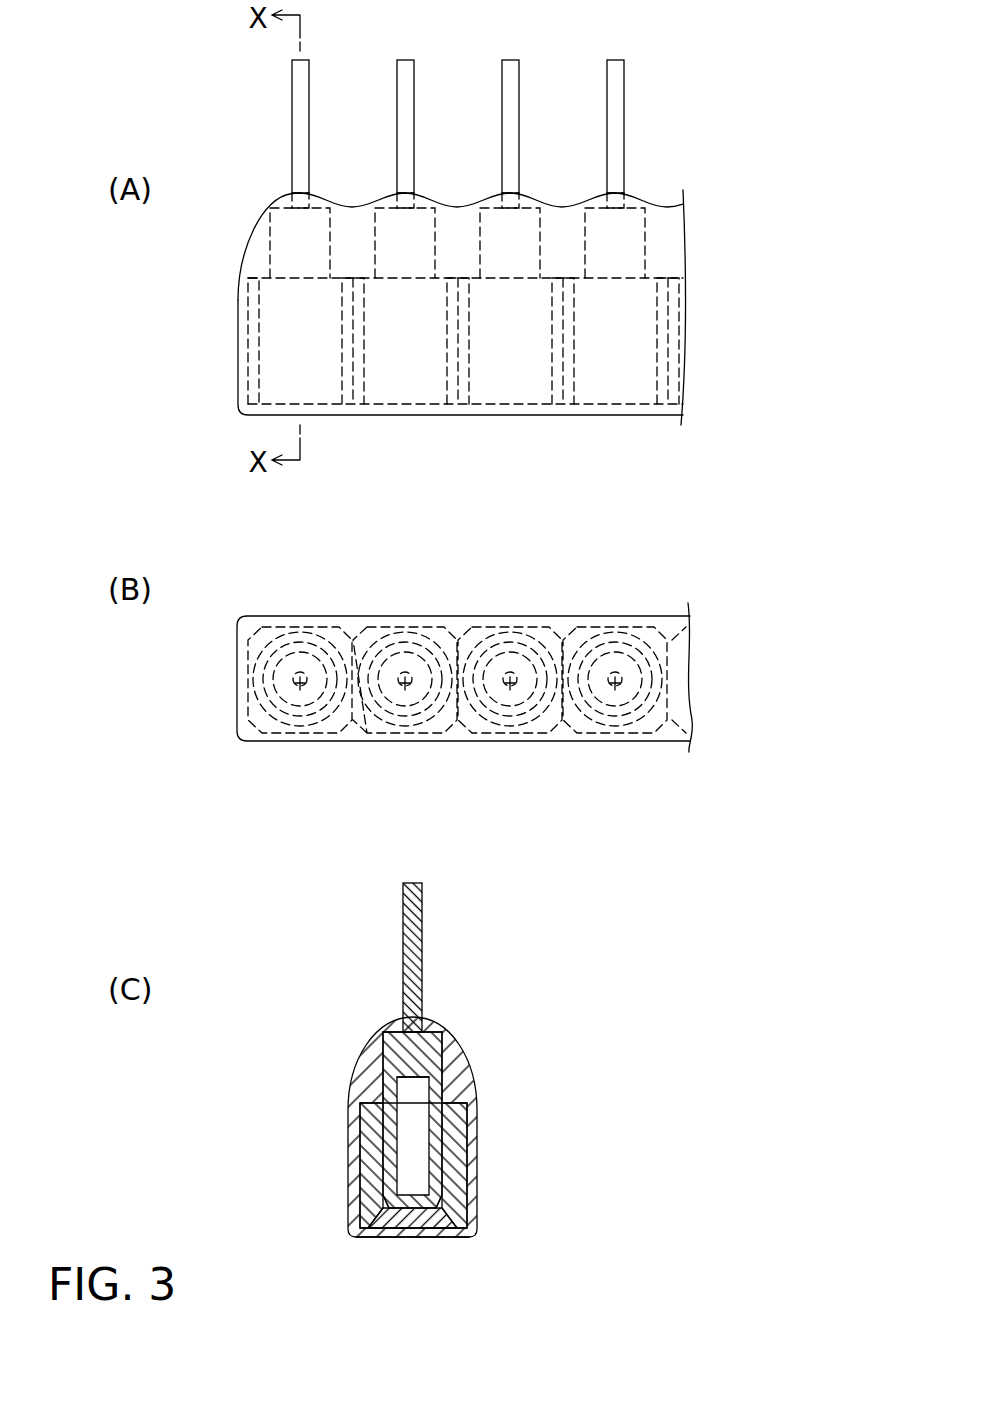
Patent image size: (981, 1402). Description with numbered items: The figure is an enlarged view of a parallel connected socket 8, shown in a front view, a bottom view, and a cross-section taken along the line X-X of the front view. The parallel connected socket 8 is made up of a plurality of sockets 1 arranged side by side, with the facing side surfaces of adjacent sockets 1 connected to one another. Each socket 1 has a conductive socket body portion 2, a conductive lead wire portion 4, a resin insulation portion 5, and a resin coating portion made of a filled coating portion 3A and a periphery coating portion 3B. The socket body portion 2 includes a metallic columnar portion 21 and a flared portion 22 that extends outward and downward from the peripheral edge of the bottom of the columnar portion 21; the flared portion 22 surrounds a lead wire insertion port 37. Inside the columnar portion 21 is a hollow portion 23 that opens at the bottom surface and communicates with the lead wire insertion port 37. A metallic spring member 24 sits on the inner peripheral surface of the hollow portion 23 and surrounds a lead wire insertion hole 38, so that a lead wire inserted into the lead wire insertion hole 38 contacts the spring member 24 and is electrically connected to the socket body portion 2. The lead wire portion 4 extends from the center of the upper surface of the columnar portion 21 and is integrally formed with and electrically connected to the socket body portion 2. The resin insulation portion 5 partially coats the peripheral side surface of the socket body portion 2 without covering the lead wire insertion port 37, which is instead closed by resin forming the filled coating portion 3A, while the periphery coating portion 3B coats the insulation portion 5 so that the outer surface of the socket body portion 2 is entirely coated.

The socket 1 is at (325, 478).
The socket body portion 2 is at (286, 237).
The filled coating portion 3A is at (307, 672).
The periphery coating portion 3B is at (557, 222).
The lead wire portion 4 is at (297, 90).
The resin insulation portion 5 is at (317, 385).
The parallel connected socket 8 is at (696, 57).
The columnar portion 21 is at (395, 1053).
The flared portion 22 is at (387, 1238).
The hollow portion 23 is at (408, 1092).
The spring member 24 is at (395, 1177).
The lead wire insertion port 37 is at (397, 1225).
The lead wire insertion hole 38 is at (297, 690).